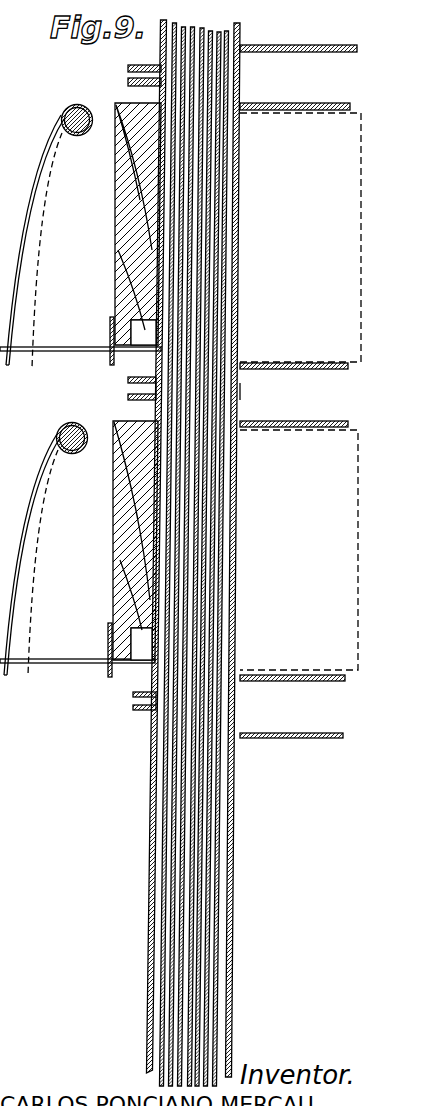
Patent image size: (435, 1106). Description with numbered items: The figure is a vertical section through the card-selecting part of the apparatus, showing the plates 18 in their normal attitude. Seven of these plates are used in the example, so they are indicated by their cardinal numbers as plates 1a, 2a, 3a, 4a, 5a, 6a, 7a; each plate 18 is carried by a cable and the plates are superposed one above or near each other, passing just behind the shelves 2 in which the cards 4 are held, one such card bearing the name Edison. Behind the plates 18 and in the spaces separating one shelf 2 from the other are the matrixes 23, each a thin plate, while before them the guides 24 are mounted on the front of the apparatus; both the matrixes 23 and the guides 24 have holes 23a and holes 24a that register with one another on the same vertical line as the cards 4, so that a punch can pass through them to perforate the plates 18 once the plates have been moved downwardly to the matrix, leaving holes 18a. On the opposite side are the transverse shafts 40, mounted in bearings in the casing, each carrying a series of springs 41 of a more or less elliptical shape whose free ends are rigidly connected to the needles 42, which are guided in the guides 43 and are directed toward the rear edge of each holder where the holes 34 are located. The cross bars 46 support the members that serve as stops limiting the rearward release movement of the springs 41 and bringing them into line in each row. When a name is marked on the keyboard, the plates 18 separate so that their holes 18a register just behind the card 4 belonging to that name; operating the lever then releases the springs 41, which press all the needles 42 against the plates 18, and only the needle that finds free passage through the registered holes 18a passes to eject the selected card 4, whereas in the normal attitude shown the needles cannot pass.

The plate 18 is at (235, 33).
The hole 18a is at (197, 554).
The plate number one 1a is at (217, 888).
The plate number two 2a is at (208, 866).
The plate number three 3a is at (201, 843).
The plate number four 4a is at (196, 822).
The plate number five 5a is at (188, 798).
The plate number six 6a is at (178, 774).
The plate number seven 7a is at (170, 752).
The matrix 23 is at (141, 65).
The hole 23a is at (131, 72).
The shaft 40 is at (86, 94).
The spring 41 is at (31, 212).
The needle 42 is at (88, 352).
The guide 43 is at (110, 362).
The cross bar 46 is at (118, 245).
The shelf 2 is at (338, 103).
The card 4 is at (346, 205).
The hole 34 is at (241, 356).
The hole 24a is at (241, 396).
The guide 24 is at (242, 416).